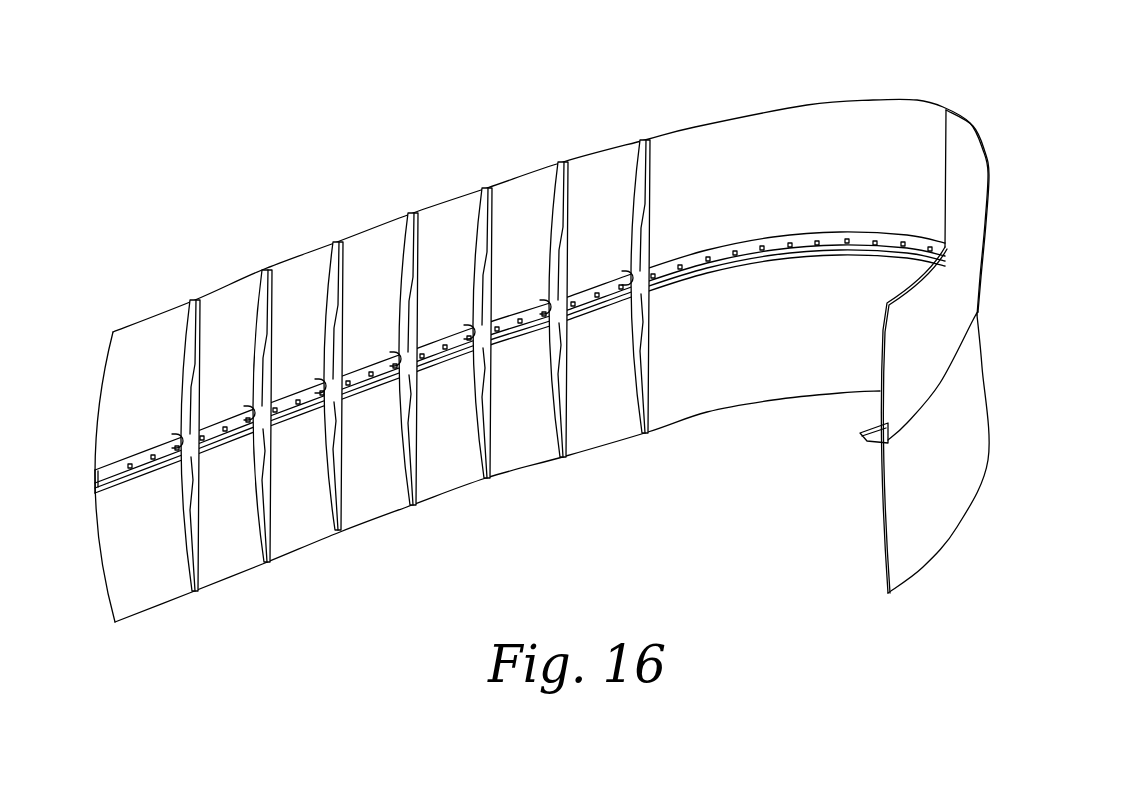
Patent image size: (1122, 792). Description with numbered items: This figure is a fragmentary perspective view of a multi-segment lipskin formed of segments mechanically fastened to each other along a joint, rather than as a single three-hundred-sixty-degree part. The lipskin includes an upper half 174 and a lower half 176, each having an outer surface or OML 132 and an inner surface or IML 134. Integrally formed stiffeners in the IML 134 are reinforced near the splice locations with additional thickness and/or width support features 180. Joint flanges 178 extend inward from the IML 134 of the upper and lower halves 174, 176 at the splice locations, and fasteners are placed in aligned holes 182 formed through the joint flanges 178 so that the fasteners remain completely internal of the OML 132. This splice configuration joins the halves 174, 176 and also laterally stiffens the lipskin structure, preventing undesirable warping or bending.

The outer surface or OML 132 is at (960, 501).
The inner surface or IML 134 is at (842, 357).
The upper half 174 is at (775, 127).
The lower half 176 is at (743, 393).
The joint flanges 178 is at (830, 247).
The support features 180 is at (188, 408).
The aligned holes 182 is at (735, 258).